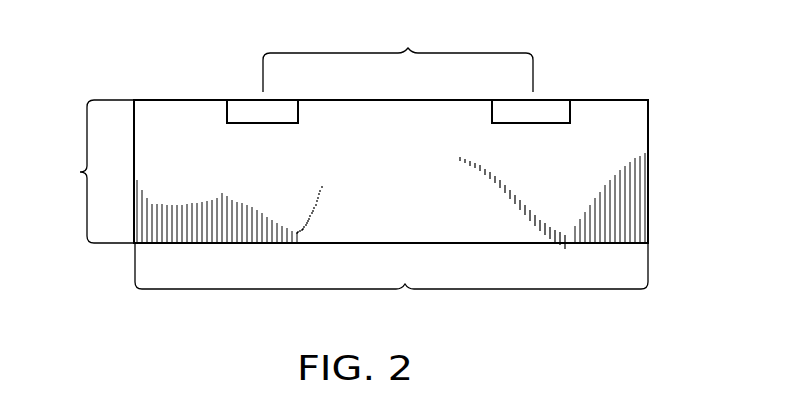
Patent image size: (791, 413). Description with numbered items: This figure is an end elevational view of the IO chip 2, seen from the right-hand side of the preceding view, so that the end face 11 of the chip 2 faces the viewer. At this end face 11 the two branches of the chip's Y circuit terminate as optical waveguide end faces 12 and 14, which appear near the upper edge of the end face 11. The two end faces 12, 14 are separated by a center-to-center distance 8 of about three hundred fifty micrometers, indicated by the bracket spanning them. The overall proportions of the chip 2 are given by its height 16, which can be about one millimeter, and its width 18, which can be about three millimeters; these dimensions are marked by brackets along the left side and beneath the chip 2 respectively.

The IO chip 2 is at (164, 96).
The center-to-center distance 8 is at (398, 58).
The end face 11 is at (615, 185).
The optical waveguide end face 12 is at (253, 113).
The optical waveguide end face 14 is at (551, 105).
The height 16 is at (89, 171).
The width 18 is at (391, 282).